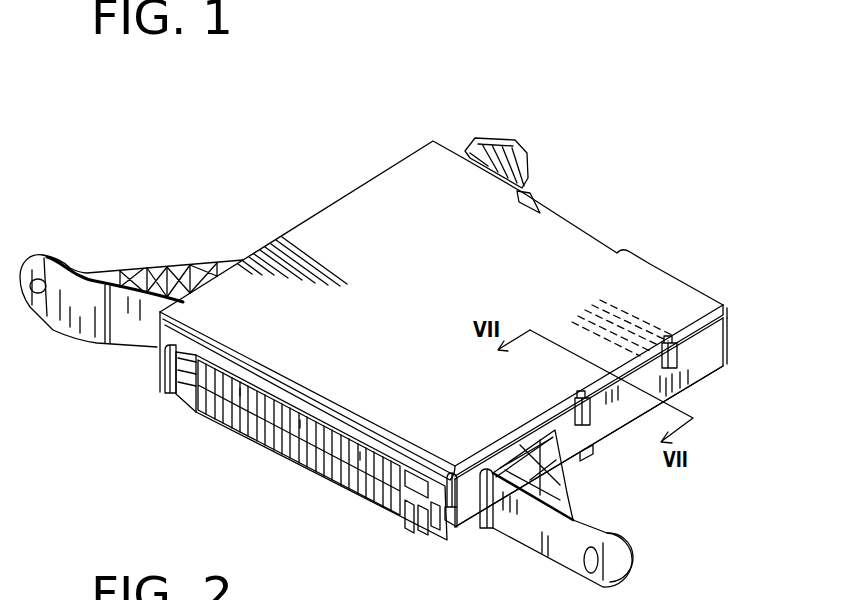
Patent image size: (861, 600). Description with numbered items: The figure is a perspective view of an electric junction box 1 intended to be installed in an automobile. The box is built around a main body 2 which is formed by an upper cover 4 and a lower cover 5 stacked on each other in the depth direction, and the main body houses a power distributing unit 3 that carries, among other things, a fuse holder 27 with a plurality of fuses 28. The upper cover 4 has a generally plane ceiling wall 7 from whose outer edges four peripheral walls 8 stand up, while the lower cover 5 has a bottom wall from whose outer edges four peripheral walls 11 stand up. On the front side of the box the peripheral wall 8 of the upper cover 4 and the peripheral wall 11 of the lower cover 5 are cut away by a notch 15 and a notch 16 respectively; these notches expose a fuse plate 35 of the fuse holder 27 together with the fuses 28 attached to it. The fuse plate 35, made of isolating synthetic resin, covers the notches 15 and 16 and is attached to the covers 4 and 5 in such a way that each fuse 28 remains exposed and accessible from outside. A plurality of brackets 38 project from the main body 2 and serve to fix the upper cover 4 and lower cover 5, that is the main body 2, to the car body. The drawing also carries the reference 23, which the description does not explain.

The electric junction box 1 is at (441, 264).
The main body 2 is at (636, 412).
The power distributing unit 3 is at (420, 547).
The upper cover 4 is at (740, 317).
The lower cover 5 is at (790, 303).
The ceiling wall 7 is at (568, 277).
The peripheral wall 8 is at (643, 373).
The peripheral wall 11 is at (162, 377).
The notch 15 is at (410, 464).
The notch 16 is at (437, 540).
The engaging clip 23 is at (666, 337).
The fuse holder 27 is at (310, 456).
The fuse 28 is at (382, 449).
The fuse plate 35 is at (334, 413).
The bracket 38 is at (117, 272).